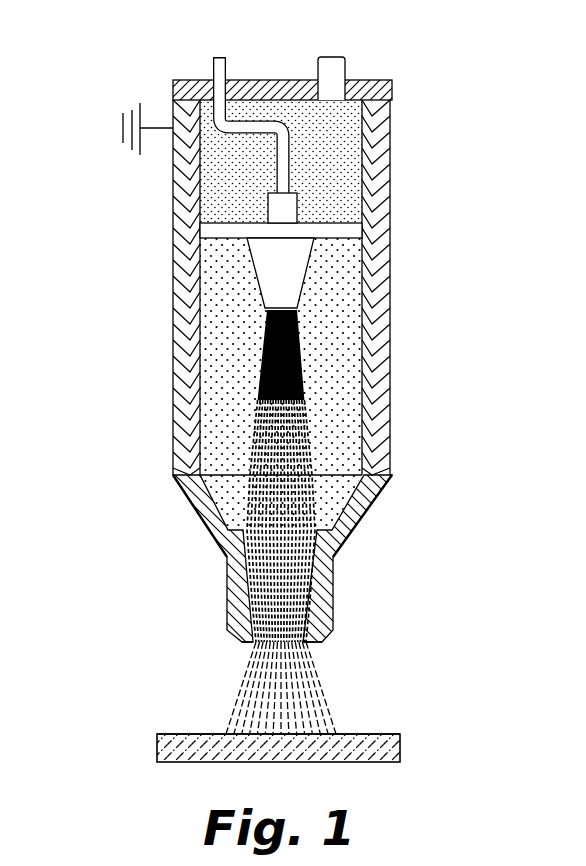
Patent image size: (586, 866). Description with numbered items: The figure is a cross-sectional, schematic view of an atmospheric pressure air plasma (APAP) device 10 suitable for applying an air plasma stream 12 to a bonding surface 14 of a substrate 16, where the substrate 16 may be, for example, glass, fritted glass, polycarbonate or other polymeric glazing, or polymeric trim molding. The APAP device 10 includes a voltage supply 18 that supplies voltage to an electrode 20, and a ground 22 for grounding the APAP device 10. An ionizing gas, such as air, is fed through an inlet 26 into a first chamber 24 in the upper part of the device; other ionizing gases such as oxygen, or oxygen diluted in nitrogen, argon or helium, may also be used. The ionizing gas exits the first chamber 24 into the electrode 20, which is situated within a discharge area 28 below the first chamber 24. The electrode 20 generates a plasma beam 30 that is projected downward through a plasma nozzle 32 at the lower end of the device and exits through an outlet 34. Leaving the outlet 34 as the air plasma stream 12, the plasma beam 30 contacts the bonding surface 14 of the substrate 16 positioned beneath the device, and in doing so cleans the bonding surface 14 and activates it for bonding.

The atmospheric pressure air plasma (APAP) device 10 is at (97, 475).
The air plasma stream 12 is at (297, 690).
The bonding surface 14 is at (367, 734).
The substrate 16 is at (173, 750).
The voltage supply 18 is at (210, 72).
The electrode 20 is at (308, 273).
The ground 22 is at (158, 128).
The first chamber 24 is at (338, 160).
The inlet 26 is at (347, 70).
The discharge area 28 is at (222, 354).
The plasma beam 30 is at (303, 415).
The plasma nozzle 32 is at (337, 595).
The outlet 34 is at (255, 642).